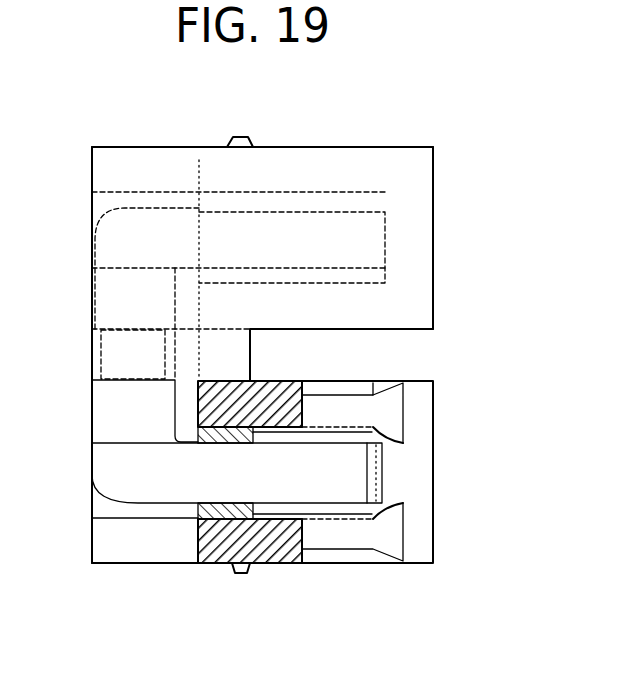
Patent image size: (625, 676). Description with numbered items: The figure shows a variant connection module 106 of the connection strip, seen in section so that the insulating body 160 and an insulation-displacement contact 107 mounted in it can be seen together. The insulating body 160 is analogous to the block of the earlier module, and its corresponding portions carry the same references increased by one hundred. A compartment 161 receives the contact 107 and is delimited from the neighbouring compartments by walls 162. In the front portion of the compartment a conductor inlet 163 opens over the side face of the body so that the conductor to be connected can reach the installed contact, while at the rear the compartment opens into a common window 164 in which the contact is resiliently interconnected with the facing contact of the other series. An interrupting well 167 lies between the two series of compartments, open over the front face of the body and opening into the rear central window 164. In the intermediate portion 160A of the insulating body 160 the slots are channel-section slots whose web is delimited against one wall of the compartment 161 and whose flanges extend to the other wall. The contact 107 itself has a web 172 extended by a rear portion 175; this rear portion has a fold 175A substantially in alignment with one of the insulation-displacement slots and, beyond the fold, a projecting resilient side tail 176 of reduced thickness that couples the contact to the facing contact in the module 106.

The connection module 106 is at (378, 130).
The insulation-displacement contact 107 is at (110, 215).
The insulating body 160 is at (139, 145).
The intermediate portion 160A is at (230, 563).
The compartment 161 is at (395, 197).
The wall 162 is at (435, 165).
The conductor inlet 163 is at (357, 558).
The common window 164 is at (183, 315).
The interrupting well 167 is at (240, 137).
The web 172 is at (337, 477).
The rear portion 175 is at (122, 473).
The fold 175A is at (127, 440).
The resilient side tail 176 is at (125, 356).